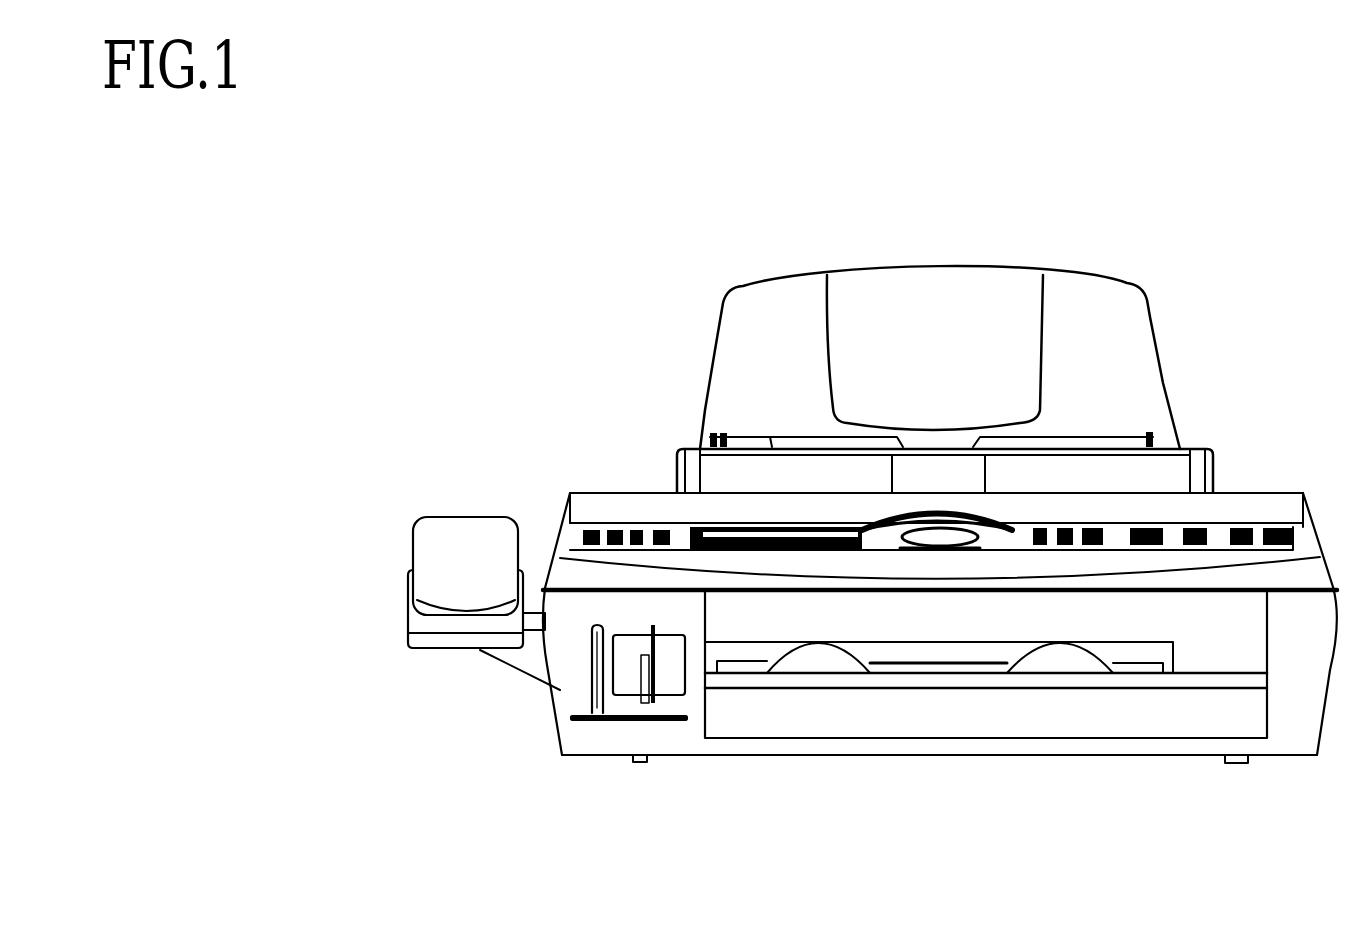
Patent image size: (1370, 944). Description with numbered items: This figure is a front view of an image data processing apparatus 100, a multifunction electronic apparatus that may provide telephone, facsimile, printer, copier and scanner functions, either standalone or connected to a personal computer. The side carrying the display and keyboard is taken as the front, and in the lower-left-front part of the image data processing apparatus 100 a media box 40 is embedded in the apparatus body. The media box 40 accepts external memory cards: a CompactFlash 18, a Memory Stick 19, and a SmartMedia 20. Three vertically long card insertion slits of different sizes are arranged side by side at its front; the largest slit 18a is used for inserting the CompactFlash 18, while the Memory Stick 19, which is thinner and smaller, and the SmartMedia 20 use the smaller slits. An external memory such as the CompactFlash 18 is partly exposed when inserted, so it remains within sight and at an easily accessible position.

The image data processing apparatus 100 is at (1248, 244).
The CompactFlash 18 is at (597, 670).
The card insertion slot 18a is at (597, 657).
The Memory Stick 19 is at (598, 712).
The SmartMedia 20 is at (612, 695).
The media box 40 is at (675, 740).